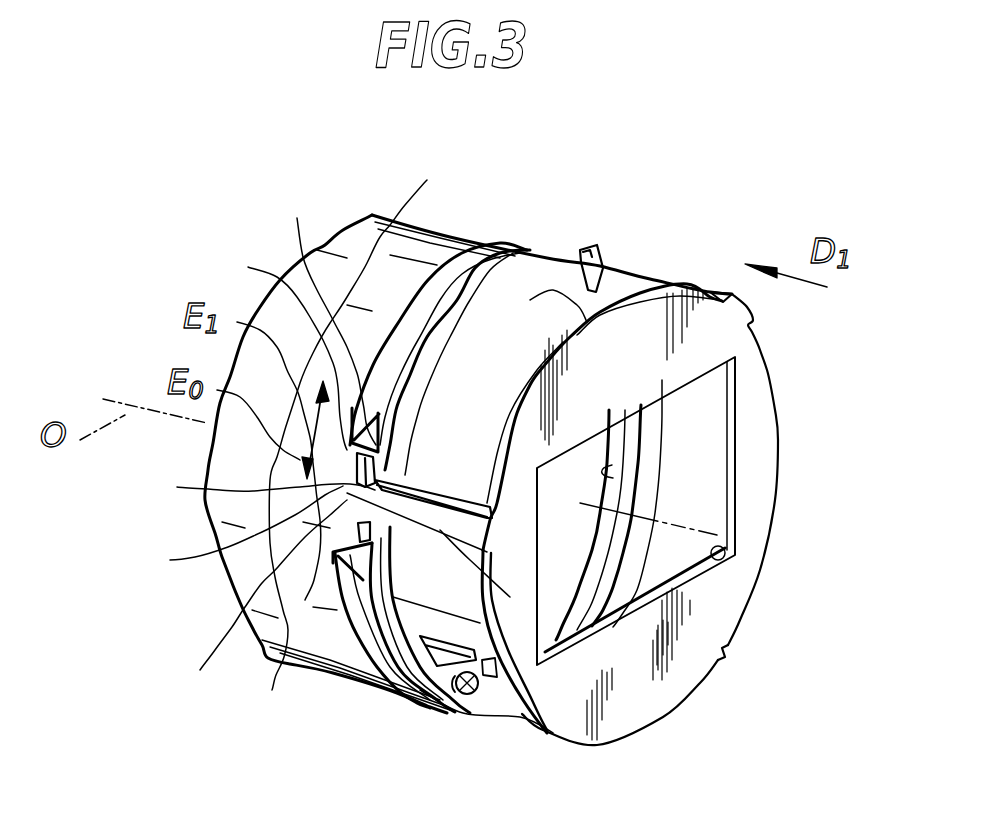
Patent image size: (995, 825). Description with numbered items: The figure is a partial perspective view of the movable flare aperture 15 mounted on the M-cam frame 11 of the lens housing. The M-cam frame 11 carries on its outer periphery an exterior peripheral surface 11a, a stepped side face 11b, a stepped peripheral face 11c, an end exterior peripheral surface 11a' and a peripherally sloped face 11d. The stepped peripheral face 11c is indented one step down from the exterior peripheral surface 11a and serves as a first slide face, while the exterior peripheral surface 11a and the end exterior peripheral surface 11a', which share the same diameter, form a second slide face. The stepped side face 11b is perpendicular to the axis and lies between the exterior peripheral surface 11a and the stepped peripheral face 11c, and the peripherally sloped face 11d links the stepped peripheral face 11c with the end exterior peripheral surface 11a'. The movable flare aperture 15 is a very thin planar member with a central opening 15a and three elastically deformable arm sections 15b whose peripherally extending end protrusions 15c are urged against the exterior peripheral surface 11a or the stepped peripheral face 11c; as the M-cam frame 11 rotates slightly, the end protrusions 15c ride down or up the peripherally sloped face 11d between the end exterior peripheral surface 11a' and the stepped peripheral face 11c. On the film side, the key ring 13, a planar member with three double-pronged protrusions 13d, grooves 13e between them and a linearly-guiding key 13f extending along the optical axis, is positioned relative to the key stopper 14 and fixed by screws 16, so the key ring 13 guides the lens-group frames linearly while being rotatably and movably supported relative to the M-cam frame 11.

The M-cam frame 11 is at (468, 432).
The exterior peripheral surface 11a is at (238, 513).
The end exterior peripheral surface 11a' is at (236, 493).
The stepped side face 11b is at (503, 255).
The stepped peripheral face 11c is at (447, 297).
The peripherally sloped face 11d is at (319, 311).
The key ring 13 is at (540, 268).
The double-pronged protrusions 13d is at (597, 250).
The grooves 13e is at (392, 458).
The linearly-guiding key 13f is at (543, 730).
The key stopper 14 is at (595, 484).
The movable flare aperture 15 is at (717, 613).
The opening 15a is at (730, 553).
The arm sections 15b is at (500, 590).
The end protrusions 15c is at (223, 535).
The screws 16 is at (468, 697).